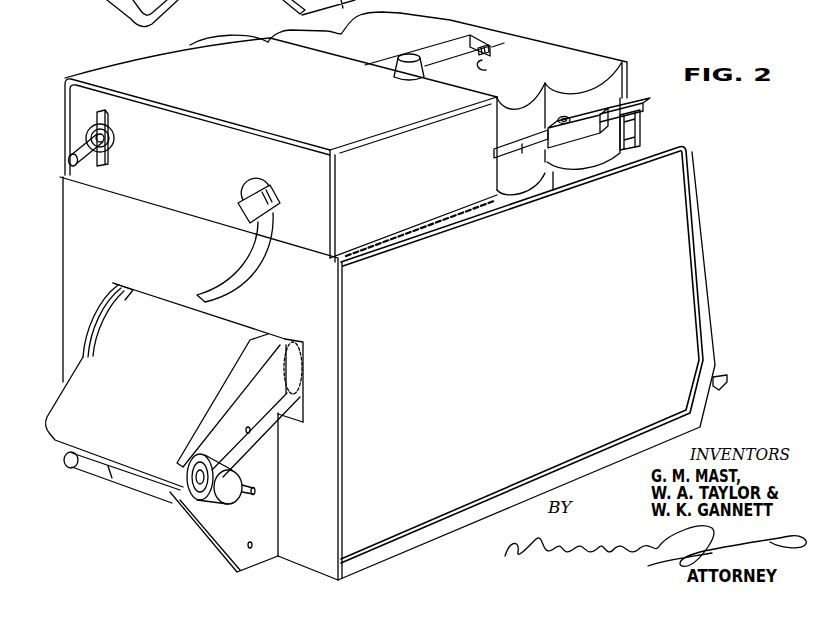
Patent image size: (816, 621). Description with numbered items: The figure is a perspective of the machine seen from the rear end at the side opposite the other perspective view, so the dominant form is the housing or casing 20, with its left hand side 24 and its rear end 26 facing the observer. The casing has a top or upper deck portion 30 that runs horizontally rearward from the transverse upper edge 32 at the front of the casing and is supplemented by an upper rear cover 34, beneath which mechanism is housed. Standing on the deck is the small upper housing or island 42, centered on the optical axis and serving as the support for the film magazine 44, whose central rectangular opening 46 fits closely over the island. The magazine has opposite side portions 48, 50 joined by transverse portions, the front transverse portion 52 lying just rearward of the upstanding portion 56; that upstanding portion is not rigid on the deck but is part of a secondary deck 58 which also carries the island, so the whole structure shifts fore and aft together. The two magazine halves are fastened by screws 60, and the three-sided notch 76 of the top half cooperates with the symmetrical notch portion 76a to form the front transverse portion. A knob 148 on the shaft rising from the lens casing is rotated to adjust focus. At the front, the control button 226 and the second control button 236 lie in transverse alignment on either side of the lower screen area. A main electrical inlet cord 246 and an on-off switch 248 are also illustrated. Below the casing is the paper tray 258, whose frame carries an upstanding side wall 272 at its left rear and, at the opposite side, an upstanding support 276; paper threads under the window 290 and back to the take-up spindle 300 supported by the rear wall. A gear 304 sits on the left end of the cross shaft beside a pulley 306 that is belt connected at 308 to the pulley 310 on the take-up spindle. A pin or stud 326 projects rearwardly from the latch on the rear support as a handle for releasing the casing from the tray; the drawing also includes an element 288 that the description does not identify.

The housing or casing 20 is at (497, 517).
The left hand side 24 is at (507, 394).
The rear end 26 is at (73, 225).
The top or upper deck portion 30 is at (510, 200).
The transverse upper edge 32 is at (680, 142).
The upper rear cover 34 is at (395, 226).
The island 42 is at (452, 60).
The film magazine 44 is at (583, 53).
The central rectangular opening 46 is at (492, 70).
The side portion 48 is at (612, 88).
The side portion 50 is at (382, 22).
The transverse portion 52 is at (481, 48).
The upstanding portion 56 is at (643, 124).
The secondary deck 58 is at (553, 190).
The screws 60 is at (557, 120).
The three-sided notch or opening 76 is at (550, 32).
The notch portion 76a is at (502, 44).
The knob 148 is at (405, 56).
The control button 226 is at (300, 7).
The second control button 236 is at (726, 380).
The main electrical inlet cord 246 is at (248, 252).
The on-off switch 248 is at (64, 162).
The paper tray 258 is at (82, 2).
The upstanding side wall 272 is at (228, 547).
The upstanding support 276 is at (122, 263).
The guide 288 is at (213, 5).
The window 290 is at (156, 13).
The take-up spindle 300 is at (250, 496).
The gear 304 is at (297, 396).
The pulley 306 is at (283, 341).
The belt 308 is at (252, 441).
The pulley 310 is at (225, 487).
The pin or stud 326 is at (66, 467).